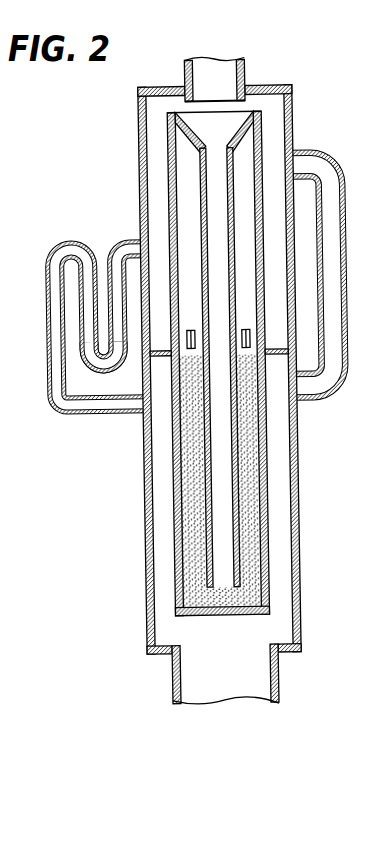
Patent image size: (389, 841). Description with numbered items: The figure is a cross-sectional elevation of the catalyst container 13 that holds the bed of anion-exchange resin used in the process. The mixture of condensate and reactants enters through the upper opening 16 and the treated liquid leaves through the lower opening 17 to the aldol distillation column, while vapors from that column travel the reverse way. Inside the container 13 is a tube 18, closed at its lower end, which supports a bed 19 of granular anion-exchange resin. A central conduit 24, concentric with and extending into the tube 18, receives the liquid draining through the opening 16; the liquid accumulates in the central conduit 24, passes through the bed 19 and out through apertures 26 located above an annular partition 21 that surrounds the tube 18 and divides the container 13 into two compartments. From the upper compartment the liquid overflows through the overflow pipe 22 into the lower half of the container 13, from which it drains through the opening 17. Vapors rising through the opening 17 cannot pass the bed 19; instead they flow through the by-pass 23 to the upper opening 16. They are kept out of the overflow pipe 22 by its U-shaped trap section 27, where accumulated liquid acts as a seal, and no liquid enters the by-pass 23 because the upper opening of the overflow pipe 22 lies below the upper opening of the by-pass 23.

The catalyst container 13 is at (90, 477).
The opening 16 is at (239, 66).
The lower opening 17 is at (168, 688).
The tube 18 is at (261, 540).
The bed 19 is at (245, 500).
The annular partition 21 is at (157, 355).
The overflow pipe 22 is at (113, 246).
The by-pass 23 is at (346, 328).
The central conduit 24 is at (232, 277).
The apertures 26 is at (180, 336).
The U-shaped trap section 27 is at (86, 362).